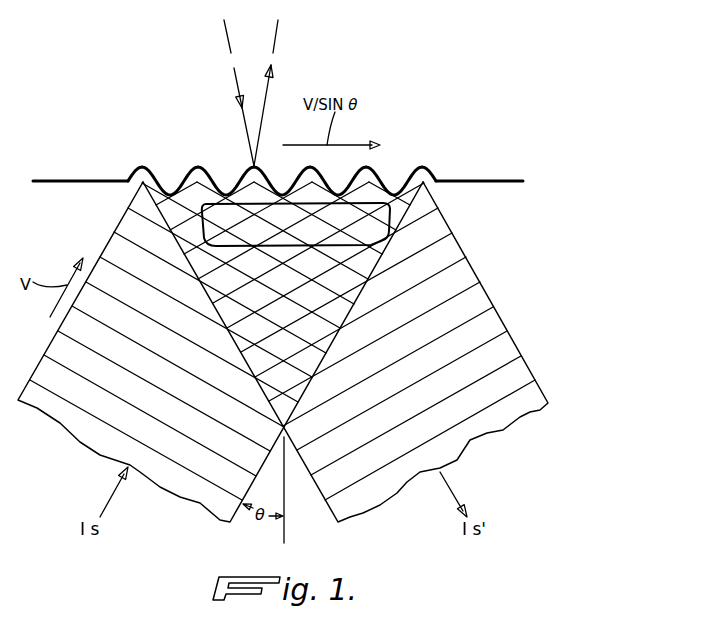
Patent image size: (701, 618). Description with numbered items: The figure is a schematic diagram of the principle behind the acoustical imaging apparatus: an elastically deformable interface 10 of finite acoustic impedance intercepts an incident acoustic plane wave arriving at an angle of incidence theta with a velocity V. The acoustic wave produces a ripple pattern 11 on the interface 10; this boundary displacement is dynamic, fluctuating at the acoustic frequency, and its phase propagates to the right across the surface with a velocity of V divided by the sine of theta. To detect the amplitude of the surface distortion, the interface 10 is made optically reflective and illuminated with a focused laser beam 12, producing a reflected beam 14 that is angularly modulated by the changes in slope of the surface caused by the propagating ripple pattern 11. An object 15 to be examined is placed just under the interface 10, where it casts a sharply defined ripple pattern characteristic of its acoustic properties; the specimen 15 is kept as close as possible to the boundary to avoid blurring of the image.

The elastically deformable interface 10 is at (83, 178).
The ripple pattern 11 is at (381, 182).
The focused laser beam 12 is at (237, 92).
The reflected beam 14 is at (272, 88).
The object 15 is at (400, 223).